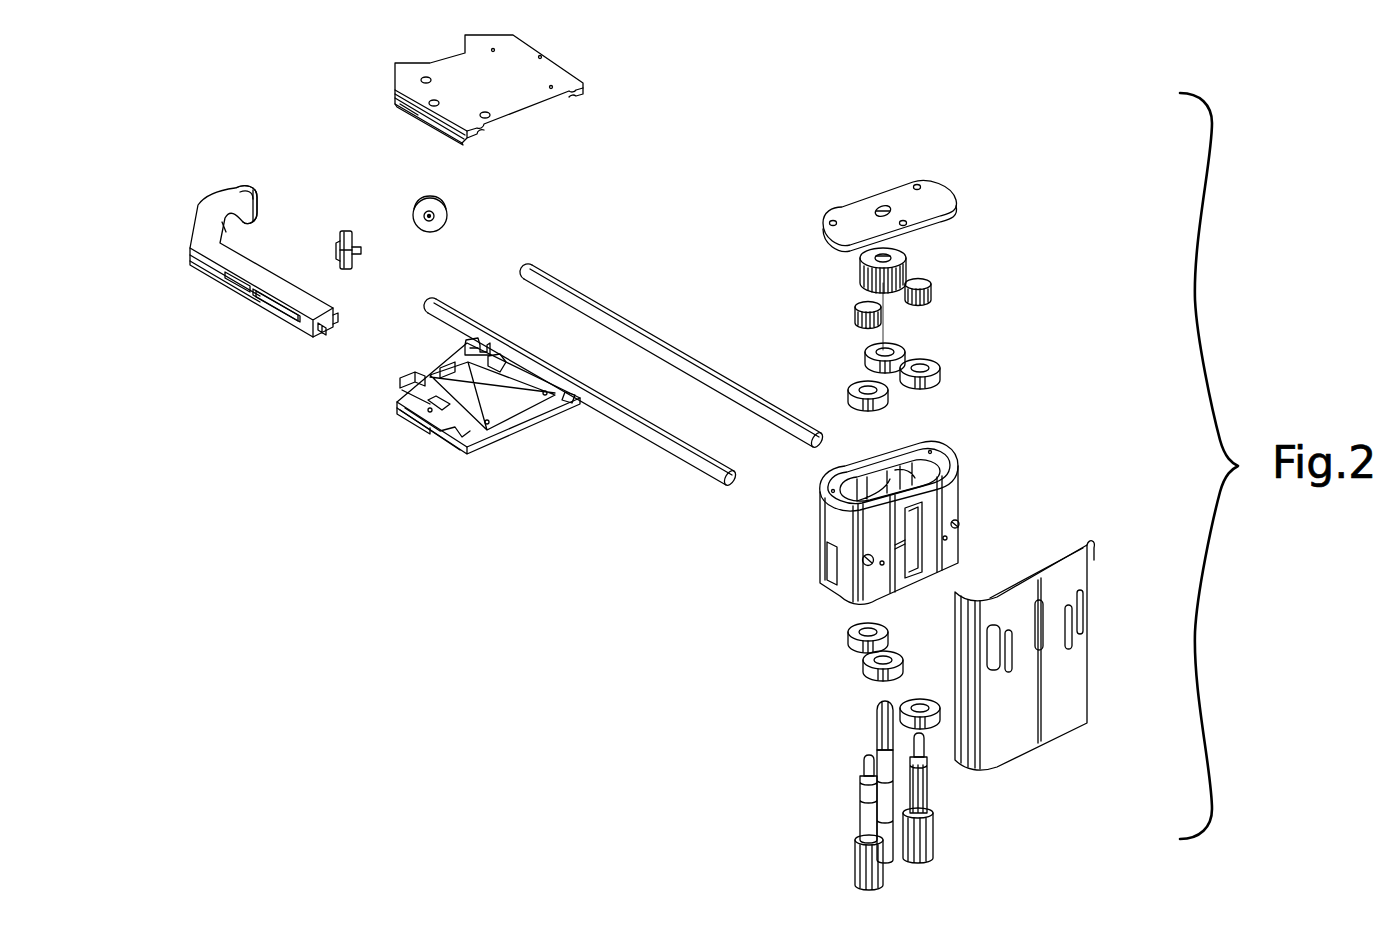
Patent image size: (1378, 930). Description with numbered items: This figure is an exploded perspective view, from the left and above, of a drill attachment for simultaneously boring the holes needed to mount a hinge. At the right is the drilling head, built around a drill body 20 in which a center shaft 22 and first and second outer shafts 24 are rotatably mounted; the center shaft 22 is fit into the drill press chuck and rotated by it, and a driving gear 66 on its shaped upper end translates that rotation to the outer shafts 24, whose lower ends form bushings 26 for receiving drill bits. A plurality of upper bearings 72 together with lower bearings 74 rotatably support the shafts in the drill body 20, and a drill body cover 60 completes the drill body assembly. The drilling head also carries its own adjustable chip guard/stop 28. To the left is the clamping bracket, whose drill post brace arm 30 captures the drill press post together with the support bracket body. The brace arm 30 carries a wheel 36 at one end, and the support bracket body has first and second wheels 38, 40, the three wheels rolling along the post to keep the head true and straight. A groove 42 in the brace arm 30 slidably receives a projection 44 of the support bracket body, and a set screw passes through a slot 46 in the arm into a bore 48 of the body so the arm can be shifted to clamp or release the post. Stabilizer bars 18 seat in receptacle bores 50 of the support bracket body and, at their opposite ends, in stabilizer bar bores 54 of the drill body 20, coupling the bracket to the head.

The stabilizer bar 18 is at (677, 453).
The drill body 20 is at (962, 487).
The center shaft 22 is at (878, 762).
The first outer shaft 24 is at (862, 800).
The bushing 26 is at (862, 852).
The chip guard/stop 28 is at (1097, 620).
The drill post brace arm 30 is at (226, 256).
The wheel 36 is at (262, 196).
The first wheel 38 is at (350, 230).
The second wheel 40 is at (429, 234).
The groove 42 is at (340, 318).
The projection 44 is at (466, 134).
The slot 46 is at (290, 316).
The bore 48 is at (410, 106).
The stabilizer bar receptacle bore 50 is at (486, 428).
The stabilizer bar bore 54 is at (863, 556).
The drill body cover 60 is at (955, 193).
The driving gear 66 is at (922, 262).
The upper bearings 72 is at (953, 368).
The roller 74 is at (897, 698).